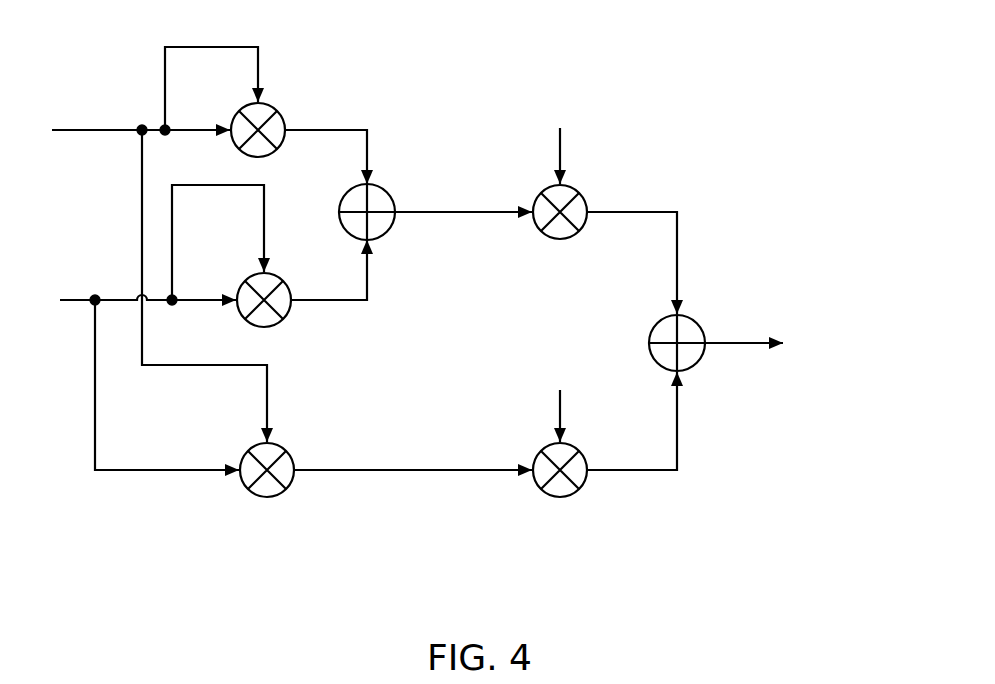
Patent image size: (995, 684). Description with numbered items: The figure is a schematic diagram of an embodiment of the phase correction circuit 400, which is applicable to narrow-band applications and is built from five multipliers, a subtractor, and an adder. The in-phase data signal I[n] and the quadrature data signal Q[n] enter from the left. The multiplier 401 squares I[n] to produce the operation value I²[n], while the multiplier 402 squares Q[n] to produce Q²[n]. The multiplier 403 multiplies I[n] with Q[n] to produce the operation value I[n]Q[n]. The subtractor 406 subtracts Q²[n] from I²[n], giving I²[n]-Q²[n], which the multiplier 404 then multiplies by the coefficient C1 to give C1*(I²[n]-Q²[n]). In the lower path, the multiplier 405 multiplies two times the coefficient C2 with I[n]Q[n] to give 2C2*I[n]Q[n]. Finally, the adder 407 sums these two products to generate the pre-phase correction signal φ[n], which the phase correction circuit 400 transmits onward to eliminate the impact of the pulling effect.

The phase correction circuit 400 is at (502, 84).
The multiplier 401 is at (240, 152).
The multiplier 402 is at (283, 319).
The multiplier 403 is at (288, 447).
The multiplier 404 is at (553, 240).
The multiplier 405 is at (553, 497).
The subtractor 406 is at (345, 193).
The adder 407 is at (656, 323).